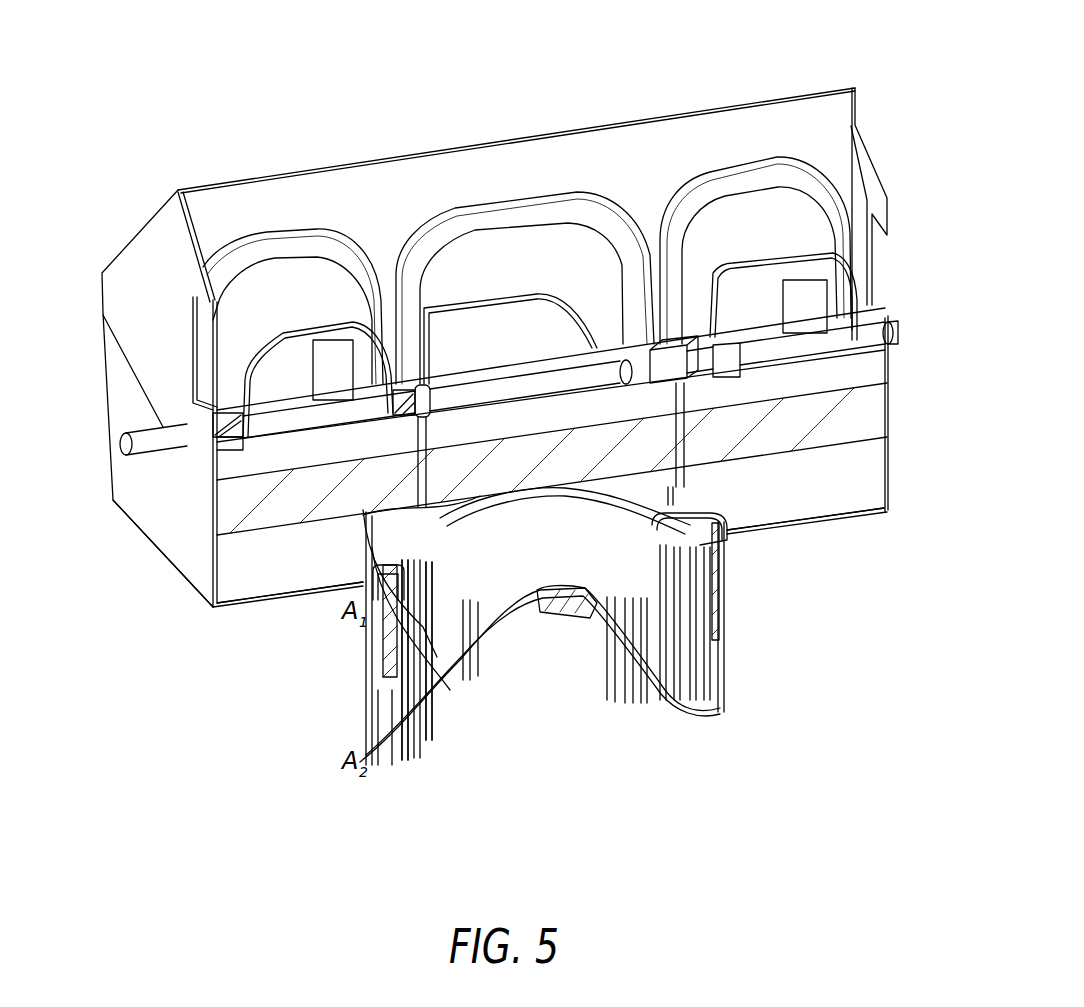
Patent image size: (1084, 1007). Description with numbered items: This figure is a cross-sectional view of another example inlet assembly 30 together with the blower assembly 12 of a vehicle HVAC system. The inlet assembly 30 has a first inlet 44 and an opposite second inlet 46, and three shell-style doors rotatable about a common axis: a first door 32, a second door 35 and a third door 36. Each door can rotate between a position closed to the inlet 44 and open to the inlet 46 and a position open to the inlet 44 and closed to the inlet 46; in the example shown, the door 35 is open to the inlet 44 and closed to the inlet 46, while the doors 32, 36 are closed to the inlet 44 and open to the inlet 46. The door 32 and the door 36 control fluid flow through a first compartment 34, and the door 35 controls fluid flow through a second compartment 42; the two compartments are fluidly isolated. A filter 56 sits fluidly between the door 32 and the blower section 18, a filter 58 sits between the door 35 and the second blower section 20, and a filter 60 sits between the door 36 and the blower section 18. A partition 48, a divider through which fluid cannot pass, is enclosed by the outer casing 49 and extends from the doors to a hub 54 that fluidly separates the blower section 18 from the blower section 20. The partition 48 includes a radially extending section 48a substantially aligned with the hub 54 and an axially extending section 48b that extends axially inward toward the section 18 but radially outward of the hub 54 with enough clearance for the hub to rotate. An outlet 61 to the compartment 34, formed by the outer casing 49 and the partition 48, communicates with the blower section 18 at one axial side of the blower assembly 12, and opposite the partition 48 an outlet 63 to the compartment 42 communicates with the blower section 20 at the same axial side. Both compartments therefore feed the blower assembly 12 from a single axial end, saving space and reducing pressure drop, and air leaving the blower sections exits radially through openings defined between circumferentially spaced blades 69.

The blower assembly 12 is at (297, 713).
The blower section 18 is at (408, 640).
The second blower section 20 is at (410, 723).
The inlet assembly 30 is at (80, 320).
The first door 32 is at (302, 293).
The first compartment 34 is at (268, 537).
The second door 35 is at (520, 250).
The third door 36 is at (763, 223).
The second compartment 42 is at (594, 492).
The first inlet 44 is at (828, 157).
The second inlet 46 is at (147, 200).
The partition 48 is at (490, 600).
The radially extending section 48a is at (465, 660).
The axially extending section 48b is at (433, 688).
The outer casing 49 is at (205, 610).
The hub 54 is at (433, 693).
The filter 56 is at (262, 490).
The filter 58 is at (717, 580).
The filter 60 is at (860, 400).
The outlet 61 is at (373, 637).
The outlet 63 is at (506, 522).
The circumferentially spaced blades 69 is at (683, 670).